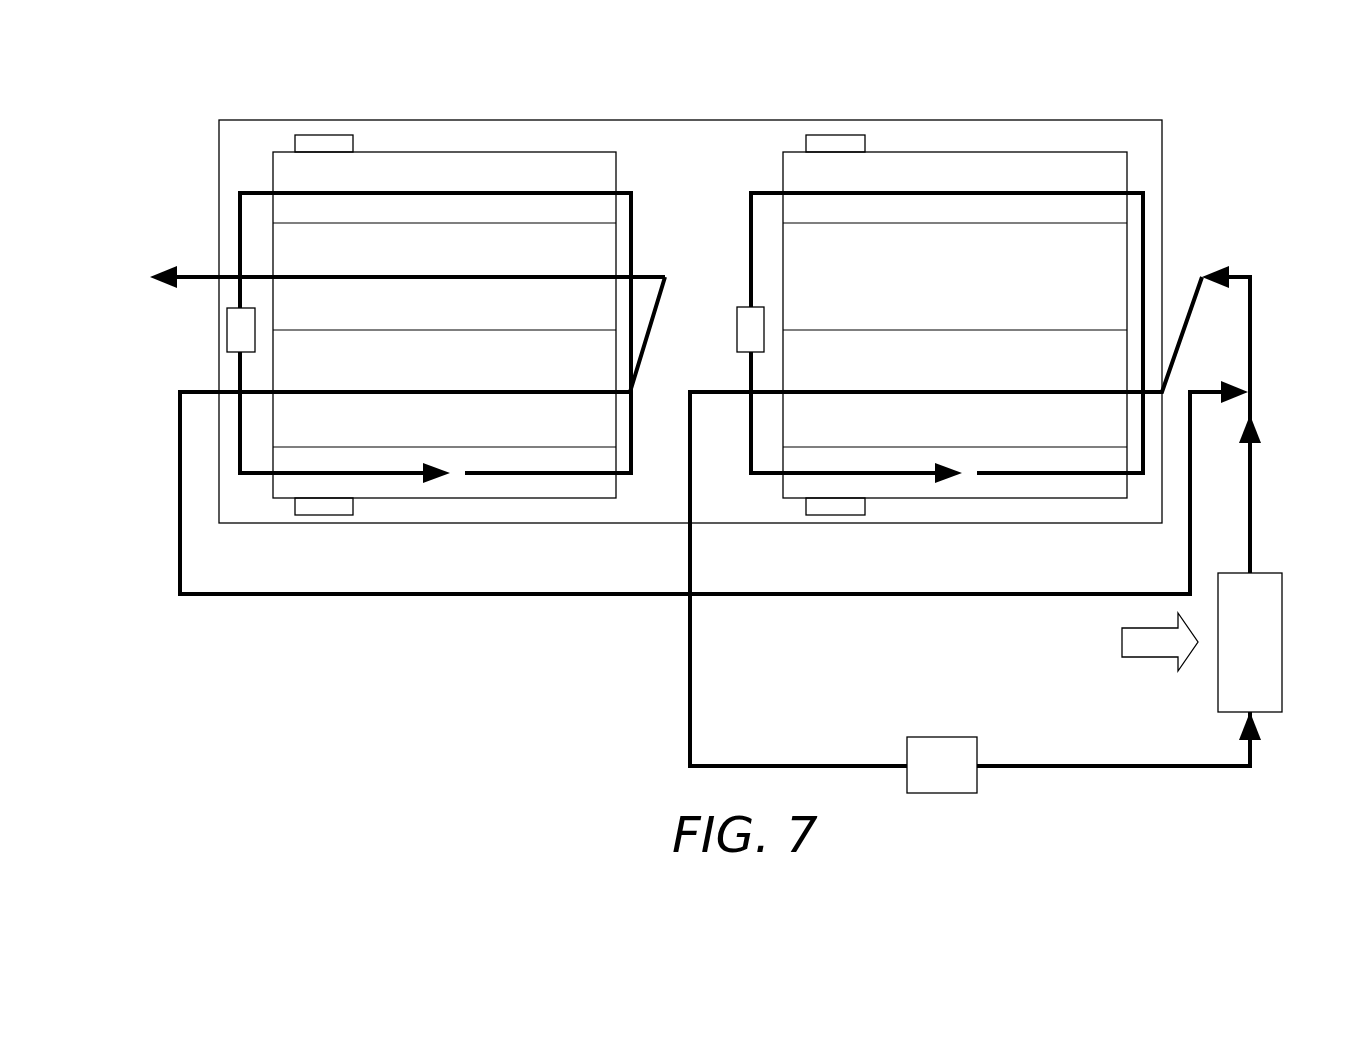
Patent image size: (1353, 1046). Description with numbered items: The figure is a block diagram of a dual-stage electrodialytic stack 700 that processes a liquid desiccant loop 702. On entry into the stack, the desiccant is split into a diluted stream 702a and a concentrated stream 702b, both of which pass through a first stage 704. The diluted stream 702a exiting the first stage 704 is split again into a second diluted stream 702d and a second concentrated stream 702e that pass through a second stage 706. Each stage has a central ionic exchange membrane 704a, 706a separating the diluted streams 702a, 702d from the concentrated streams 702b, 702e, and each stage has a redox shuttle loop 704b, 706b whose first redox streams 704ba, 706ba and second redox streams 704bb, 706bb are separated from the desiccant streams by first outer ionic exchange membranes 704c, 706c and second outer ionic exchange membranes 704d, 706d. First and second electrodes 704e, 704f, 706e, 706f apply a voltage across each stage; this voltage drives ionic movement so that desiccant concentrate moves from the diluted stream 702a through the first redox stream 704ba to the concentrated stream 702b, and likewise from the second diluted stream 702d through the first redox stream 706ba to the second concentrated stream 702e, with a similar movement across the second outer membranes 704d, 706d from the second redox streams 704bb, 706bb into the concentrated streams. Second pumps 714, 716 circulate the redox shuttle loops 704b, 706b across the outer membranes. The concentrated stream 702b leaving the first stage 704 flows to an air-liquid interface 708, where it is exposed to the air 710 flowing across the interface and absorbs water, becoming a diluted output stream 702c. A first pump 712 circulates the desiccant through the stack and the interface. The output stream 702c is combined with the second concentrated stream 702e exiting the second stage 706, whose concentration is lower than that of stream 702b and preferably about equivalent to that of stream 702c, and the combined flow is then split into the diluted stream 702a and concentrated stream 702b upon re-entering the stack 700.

The dual-stage electrodialytic stack 700 is at (736, 525).
The liquid desiccant loop 702 is at (1050, 764).
The diluted stream 702a is at (1023, 277).
The concentrated stream 702b is at (1003, 391).
The output stream 702c is at (1252, 522).
The second diluted stream 702d is at (500, 276).
The second concentrated stream 702e is at (515, 391).
The first stage 704 is at (990, 152).
The central ionic exchange membrane 704a is at (898, 330).
The redox shuttle loop 704b is at (1146, 222).
The first redox stream 704ba is at (888, 192).
The second redox stream 704bb is at (910, 476).
The first outer ionic exchange membrane 704c is at (855, 224).
The second outer ionic exchange membrane 704d is at (858, 446).
The first electrode 704e is at (822, 135).
The second electrode 704f is at (835, 515).
The second stage 706 is at (420, 152).
The central ionic exchange membrane 706a is at (363, 330).
The redox shuttle loop 706b is at (238, 220).
The first redox stream 706ba is at (521, 192).
The second redox stream 706bb is at (405, 476).
The first outer ionic exchange membrane 706c is at (390, 224).
The second outer ionic exchange membrane 706d is at (410, 446).
The first electrode 706e is at (324, 135).
The second electrode 706f is at (325, 515).
The air-liquid interface 708 is at (1218, 678).
The air flow 710 is at (1148, 657).
The first pump 712 is at (935, 737).
The second pump 714 is at (764, 340).
The second pump 716 is at (227, 330).